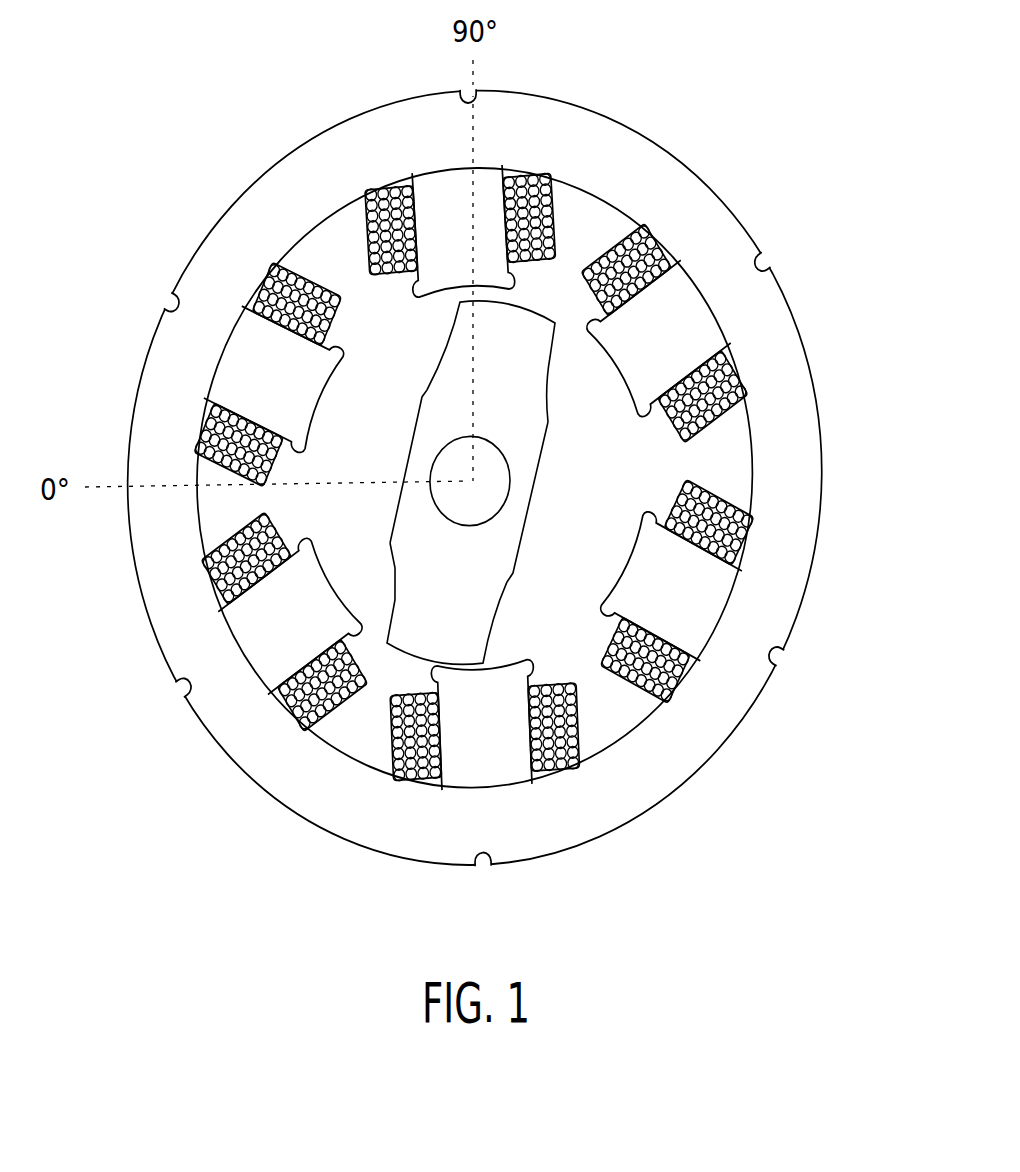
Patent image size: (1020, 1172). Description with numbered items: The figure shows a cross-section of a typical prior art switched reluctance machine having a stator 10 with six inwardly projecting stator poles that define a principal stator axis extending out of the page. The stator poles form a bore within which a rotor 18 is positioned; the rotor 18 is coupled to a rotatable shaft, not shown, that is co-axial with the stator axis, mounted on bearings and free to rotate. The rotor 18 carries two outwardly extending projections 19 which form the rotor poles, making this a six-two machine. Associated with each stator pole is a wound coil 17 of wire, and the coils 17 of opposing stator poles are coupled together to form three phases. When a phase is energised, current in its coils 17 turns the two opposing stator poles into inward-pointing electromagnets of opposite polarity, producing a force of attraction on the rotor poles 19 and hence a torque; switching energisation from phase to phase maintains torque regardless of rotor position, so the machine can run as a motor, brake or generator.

The stator 10 is at (202, 240).
The coil 17 is at (560, 223).
The rotor 18 is at (548, 422).
The projections 19 is at (495, 330).